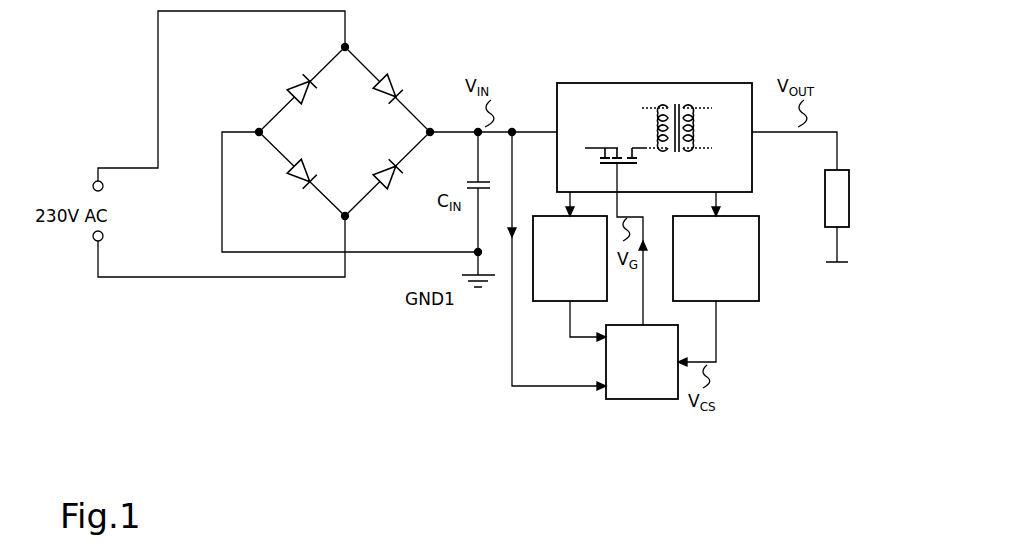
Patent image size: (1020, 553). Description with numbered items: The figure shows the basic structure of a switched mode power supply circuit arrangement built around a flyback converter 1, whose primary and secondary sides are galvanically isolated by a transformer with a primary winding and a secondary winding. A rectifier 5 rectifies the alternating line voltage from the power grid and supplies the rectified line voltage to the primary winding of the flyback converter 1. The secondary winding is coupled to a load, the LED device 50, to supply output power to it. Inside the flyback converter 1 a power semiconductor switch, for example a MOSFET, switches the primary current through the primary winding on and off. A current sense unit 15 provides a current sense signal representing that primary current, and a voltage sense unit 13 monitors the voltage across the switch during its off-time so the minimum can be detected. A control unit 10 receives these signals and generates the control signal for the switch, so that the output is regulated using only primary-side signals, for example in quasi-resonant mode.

The flyback converter 1 is at (654, 126).
The rectifier 5 is at (335, 132).
The control unit 10 is at (642, 295).
The voltage sense unit 13 is at (570, 266).
The current sense unit 15 is at (716, 279).
The LED device 50 is at (870, 216).